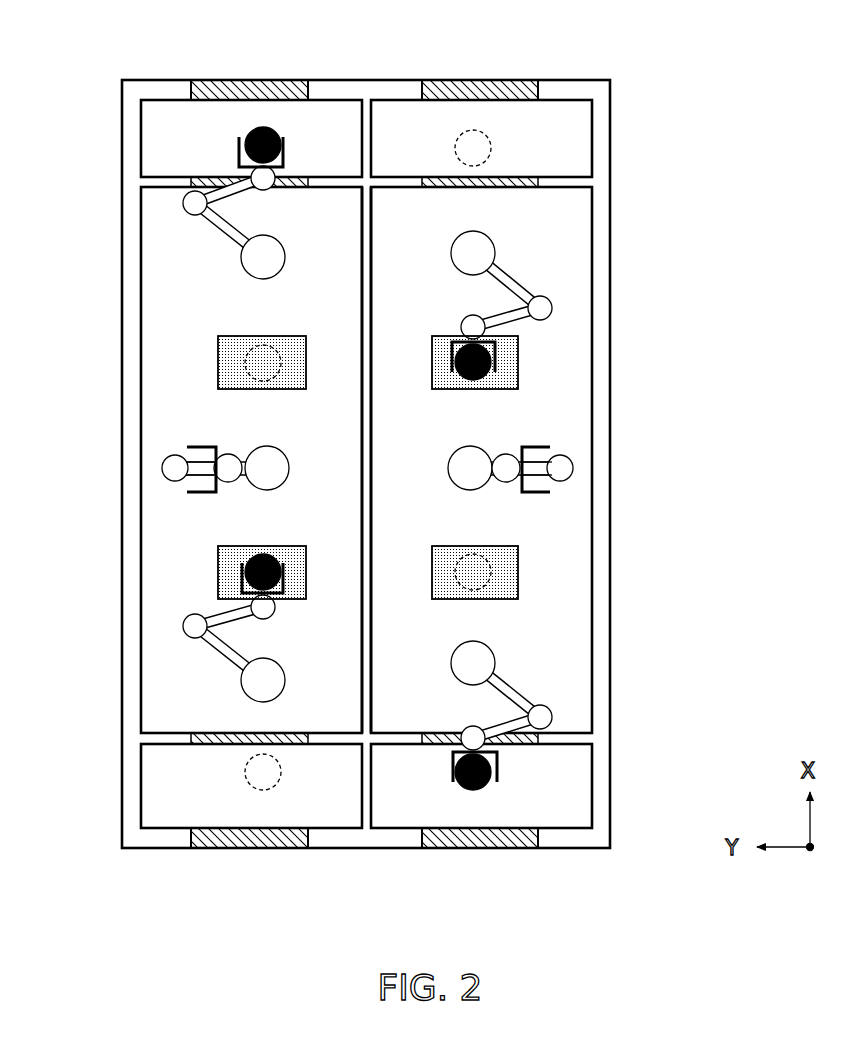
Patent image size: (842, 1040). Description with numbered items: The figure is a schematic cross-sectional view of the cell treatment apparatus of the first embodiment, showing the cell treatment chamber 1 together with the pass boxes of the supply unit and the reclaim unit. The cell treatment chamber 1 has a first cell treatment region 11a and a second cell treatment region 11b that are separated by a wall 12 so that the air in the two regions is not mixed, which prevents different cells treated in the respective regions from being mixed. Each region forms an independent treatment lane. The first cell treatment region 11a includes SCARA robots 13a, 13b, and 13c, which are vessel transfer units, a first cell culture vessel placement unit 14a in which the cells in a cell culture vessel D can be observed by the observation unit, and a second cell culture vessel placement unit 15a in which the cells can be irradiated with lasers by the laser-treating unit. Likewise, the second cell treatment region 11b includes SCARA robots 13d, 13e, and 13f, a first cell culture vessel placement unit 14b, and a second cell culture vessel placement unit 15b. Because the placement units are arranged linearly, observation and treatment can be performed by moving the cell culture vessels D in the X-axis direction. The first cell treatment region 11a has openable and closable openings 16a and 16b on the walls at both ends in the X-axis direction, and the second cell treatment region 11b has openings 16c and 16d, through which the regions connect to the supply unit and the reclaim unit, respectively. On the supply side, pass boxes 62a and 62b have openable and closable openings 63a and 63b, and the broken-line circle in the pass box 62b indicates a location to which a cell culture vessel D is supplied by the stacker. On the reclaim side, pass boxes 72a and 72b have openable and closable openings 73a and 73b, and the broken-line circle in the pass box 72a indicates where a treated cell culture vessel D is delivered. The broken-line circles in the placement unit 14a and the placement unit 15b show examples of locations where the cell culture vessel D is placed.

The cell treatment chamber 1 is at (692, 185).
The first cell treatment region 11a is at (340, 205).
The second cell treatment region 11b is at (577, 253).
The wall 12 is at (365, 223).
The SCARA robot 13a is at (197, 202).
The SCARA robot 13b is at (173, 470).
The SCARA robot 13c is at (188, 626).
The SCARA robot 13d is at (545, 311).
The SCARA robot 13e is at (565, 468).
The SCARA robot 13f is at (545, 717).
The first cell culture vessel placement unit 14a is at (230, 363).
The first cell culture vessel placement unit 14b is at (518, 363).
The second cell culture vessel placement unit 15a is at (230, 575).
The second cell culture vessel placement unit 15b is at (519, 577).
The opening 16a is at (220, 177).
The opening 16b is at (222, 745).
The opening 16c is at (507, 177).
The opening 16d is at (512, 745).
The pass box 62a is at (177, 117).
The pass box 62b is at (565, 122).
The opening 63a is at (258, 88).
The opening 63b is at (481, 88).
The pass box 72a is at (167, 808).
The pass box 72b is at (565, 812).
The opening 73a is at (262, 840).
The opening 73b is at (478, 840).
The cell culture vessel D is at (281, 130).